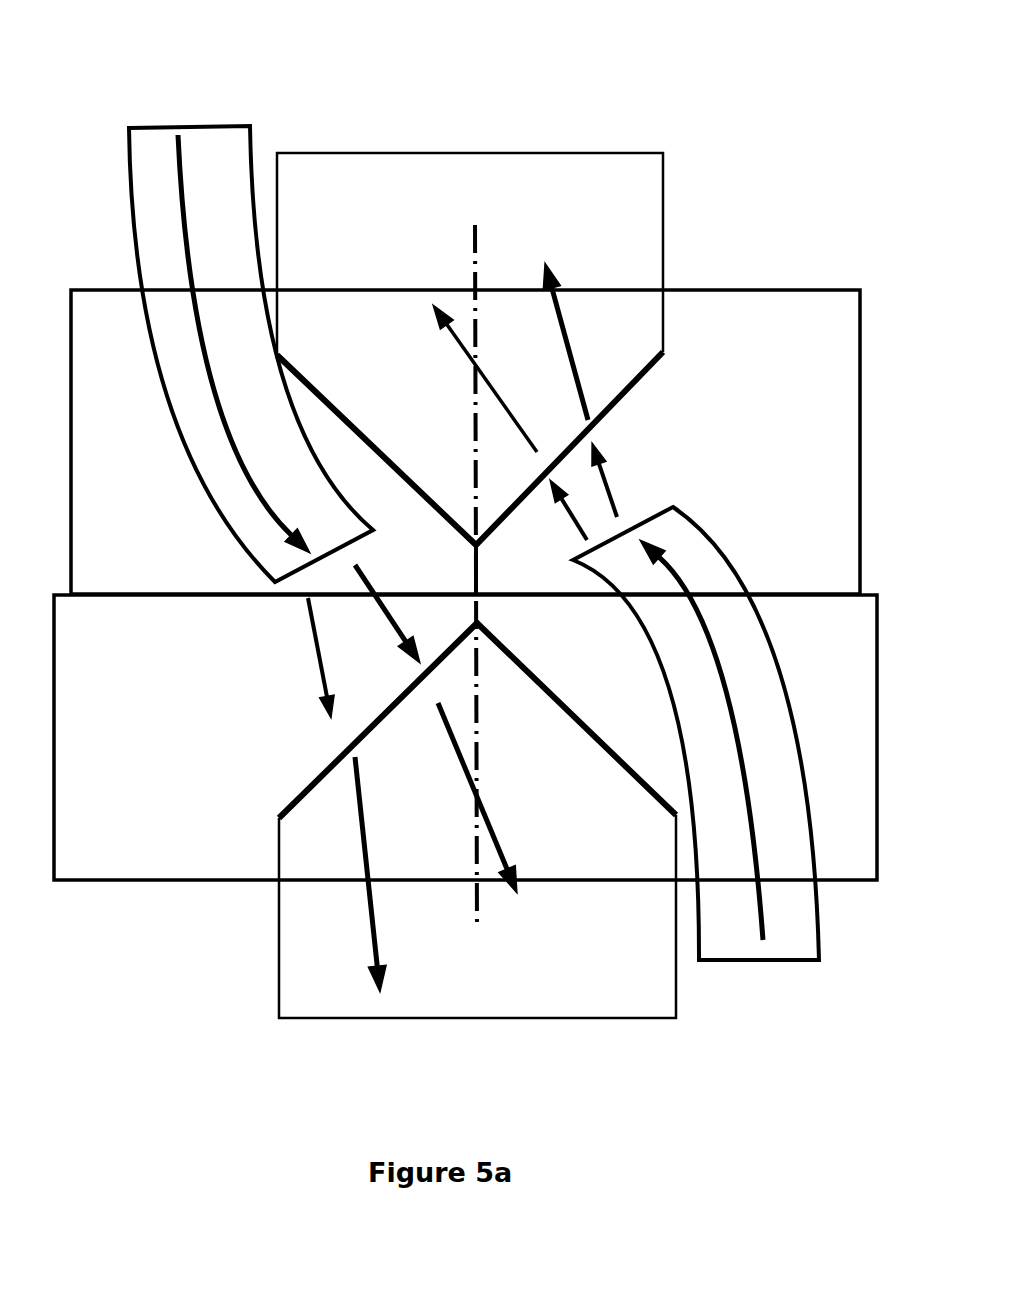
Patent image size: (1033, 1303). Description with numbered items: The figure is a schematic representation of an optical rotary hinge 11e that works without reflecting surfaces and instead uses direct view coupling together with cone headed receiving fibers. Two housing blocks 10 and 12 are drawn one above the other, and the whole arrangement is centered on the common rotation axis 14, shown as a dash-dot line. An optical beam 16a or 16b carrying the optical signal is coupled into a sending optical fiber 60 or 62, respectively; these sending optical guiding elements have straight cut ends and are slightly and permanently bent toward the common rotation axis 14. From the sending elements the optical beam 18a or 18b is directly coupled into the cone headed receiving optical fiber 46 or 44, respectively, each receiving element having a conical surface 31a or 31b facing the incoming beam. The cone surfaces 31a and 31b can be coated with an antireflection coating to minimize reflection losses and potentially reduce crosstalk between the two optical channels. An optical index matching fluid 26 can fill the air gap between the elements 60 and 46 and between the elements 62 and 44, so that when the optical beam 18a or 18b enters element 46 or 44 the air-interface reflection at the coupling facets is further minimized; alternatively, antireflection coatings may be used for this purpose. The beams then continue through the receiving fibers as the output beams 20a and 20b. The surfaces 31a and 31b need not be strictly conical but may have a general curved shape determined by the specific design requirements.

The optical rotary hinge 11e is at (755, 87).
The upper housing block 10 is at (778, 285).
The lower housing block 12 is at (168, 880).
The common rotation axis 14 is at (482, 727).
The optical beam 16a is at (178, 186).
The optical beam 16b is at (722, 692).
The optical beam 18a is at (313, 640).
The optical beam 18b is at (613, 478).
The outlet flow 20a is at (370, 915).
The outlet flow 20b is at (568, 313).
The optical index matching fluid 26 is at (397, 527).
The cone surface 31a is at (320, 773).
The cone surface 31b is at (625, 402).
The cone headed receiving optical fiber 44 is at (553, 152).
The cone headed receiving optical fiber 46 is at (625, 1020).
The sending optical fiber 60 is at (210, 123).
The sending optical fiber 62 is at (757, 957).